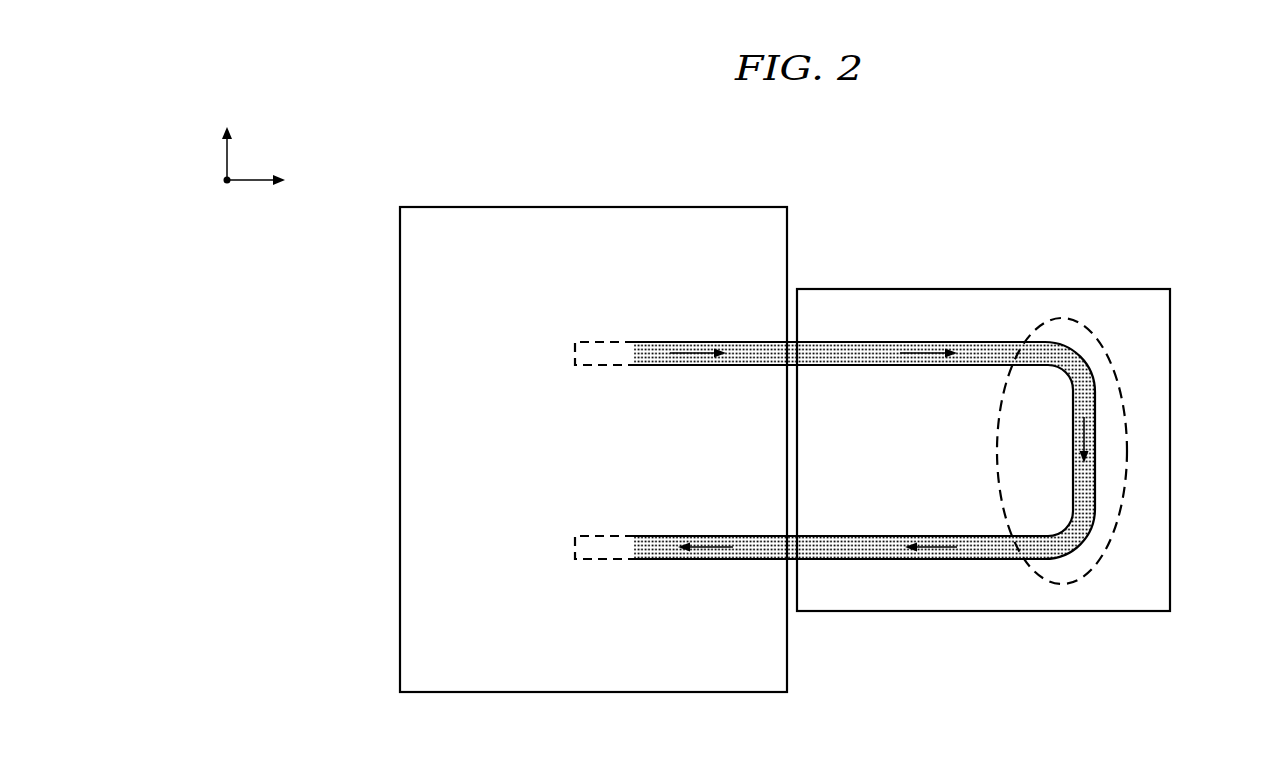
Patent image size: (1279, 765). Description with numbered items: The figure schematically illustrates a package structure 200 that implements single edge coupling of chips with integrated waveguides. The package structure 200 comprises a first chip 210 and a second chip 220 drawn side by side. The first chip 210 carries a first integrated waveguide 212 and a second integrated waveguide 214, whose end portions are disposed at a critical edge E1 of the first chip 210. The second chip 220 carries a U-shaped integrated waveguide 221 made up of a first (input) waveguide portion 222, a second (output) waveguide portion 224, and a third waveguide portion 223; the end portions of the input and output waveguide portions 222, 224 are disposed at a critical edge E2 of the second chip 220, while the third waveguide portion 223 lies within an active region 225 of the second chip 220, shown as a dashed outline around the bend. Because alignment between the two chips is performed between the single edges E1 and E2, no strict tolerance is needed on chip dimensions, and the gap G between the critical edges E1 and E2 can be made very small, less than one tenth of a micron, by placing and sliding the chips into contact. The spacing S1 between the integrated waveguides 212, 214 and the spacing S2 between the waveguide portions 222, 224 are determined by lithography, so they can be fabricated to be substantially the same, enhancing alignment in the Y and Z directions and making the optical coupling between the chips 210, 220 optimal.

The package structure 200 is at (813, 122).
The first chip 210 is at (650, 207).
The first integrated waveguide 212 is at (688, 342).
The second integrated waveguide 214 is at (689, 536).
The second chip 220 is at (1081, 289).
The U-shaped integrated waveguide 221 is at (1112, 397).
The first (input) waveguide portion 222 is at (829, 342).
The third waveguide portion 223 is at (1104, 460).
The second (output) waveguide portion 224 is at (908, 559).
The active region 225 is at (1097, 341).
The spacing S1 is at (755, 376).
The spacing S2 is at (833, 376).
The gap G is at (777, 579).
The critical edge E1 is at (778, 601).
The critical edge E2 is at (807, 579).